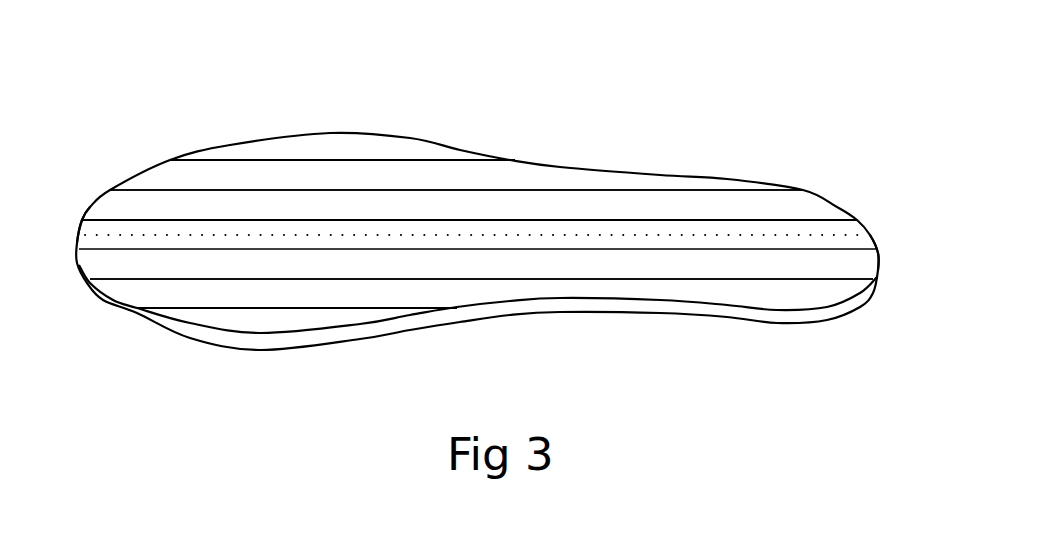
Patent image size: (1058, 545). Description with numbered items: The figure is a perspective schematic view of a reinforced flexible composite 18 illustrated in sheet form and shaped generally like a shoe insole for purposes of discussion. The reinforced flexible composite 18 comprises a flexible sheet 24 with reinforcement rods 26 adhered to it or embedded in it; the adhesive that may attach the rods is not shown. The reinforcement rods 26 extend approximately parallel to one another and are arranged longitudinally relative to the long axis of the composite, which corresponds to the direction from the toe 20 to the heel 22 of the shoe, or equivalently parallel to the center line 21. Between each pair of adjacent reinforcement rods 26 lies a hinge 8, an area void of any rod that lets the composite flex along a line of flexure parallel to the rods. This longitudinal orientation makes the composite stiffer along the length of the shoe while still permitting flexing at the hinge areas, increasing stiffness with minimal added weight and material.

The reinforced flexible composite 18 is at (878, 228).
The toe 20 is at (78, 235).
The center line 21 is at (135, 233).
The heel 22 is at (877, 250).
The flexible sheet 24 is at (603, 208).
The reinforcement rods 26 is at (332, 278).
The hinge 8 is at (525, 178).